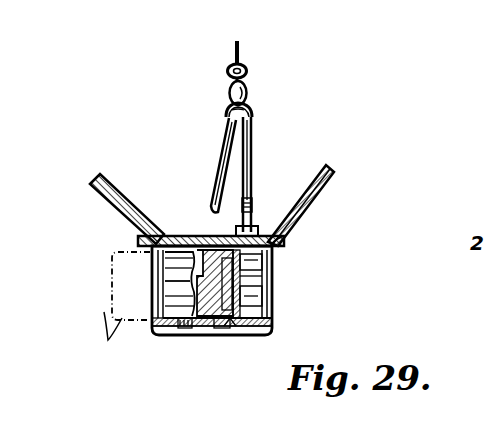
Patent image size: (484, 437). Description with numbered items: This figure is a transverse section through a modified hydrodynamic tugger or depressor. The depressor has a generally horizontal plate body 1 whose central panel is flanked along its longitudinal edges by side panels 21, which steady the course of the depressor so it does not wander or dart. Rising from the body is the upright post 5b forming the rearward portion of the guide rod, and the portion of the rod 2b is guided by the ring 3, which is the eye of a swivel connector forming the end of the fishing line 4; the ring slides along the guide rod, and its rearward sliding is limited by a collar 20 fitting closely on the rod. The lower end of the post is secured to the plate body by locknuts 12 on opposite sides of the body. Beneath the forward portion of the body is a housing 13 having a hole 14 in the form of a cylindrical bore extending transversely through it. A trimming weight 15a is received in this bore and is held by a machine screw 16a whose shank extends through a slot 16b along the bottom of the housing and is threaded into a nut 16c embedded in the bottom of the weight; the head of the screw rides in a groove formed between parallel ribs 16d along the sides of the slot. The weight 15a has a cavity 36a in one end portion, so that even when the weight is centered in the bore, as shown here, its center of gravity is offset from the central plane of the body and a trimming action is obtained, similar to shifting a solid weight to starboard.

The plate body 1 is at (181, 233).
The slanted rod 2b is at (224, 152).
The ring 3 is at (224, 114).
The fishing line 4 is at (242, 56).
The upright post 5b is at (262, 144).
The locknuts 12 is at (258, 228).
The housing 13 is at (272, 273).
The hole 14 is at (150, 262).
The trimming weight 15a is at (167, 283).
The machine screw 16a is at (236, 335).
The slot 16b is at (182, 335).
The nut 16c is at (272, 298).
The parallel ribs 16d is at (272, 324).
The collar 20 is at (248, 100).
The side panels 21 is at (96, 180).
The cavity 36a is at (284, 247).